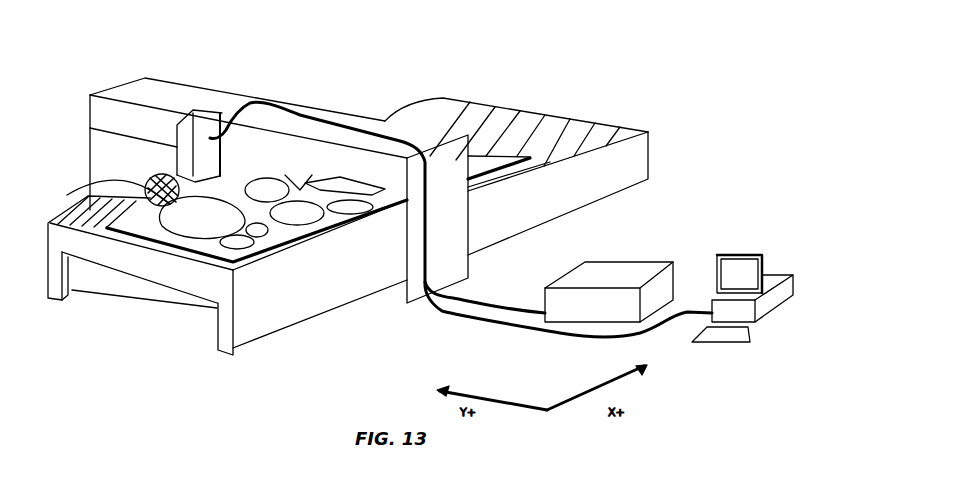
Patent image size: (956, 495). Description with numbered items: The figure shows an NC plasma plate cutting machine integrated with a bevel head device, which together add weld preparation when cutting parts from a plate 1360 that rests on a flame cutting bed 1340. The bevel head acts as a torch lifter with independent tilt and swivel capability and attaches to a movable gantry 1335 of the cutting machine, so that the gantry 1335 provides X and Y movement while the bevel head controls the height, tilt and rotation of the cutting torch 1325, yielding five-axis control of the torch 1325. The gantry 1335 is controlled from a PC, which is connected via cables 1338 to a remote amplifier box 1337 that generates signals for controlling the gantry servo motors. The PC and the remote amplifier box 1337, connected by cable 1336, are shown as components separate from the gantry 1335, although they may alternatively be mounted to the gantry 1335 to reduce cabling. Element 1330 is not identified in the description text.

The cutting torch 1325 is at (90, 216).
The housing frame 1330 is at (183, 157).
The movable gantry 1335 is at (175, 105).
The cable 1336 is at (213, 110).
The remote amplifier box 1337 is at (627, 262).
The cables 1338 is at (500, 282).
The flame cutting bed 1340 is at (425, 108).
The plate 1360 is at (275, 233).